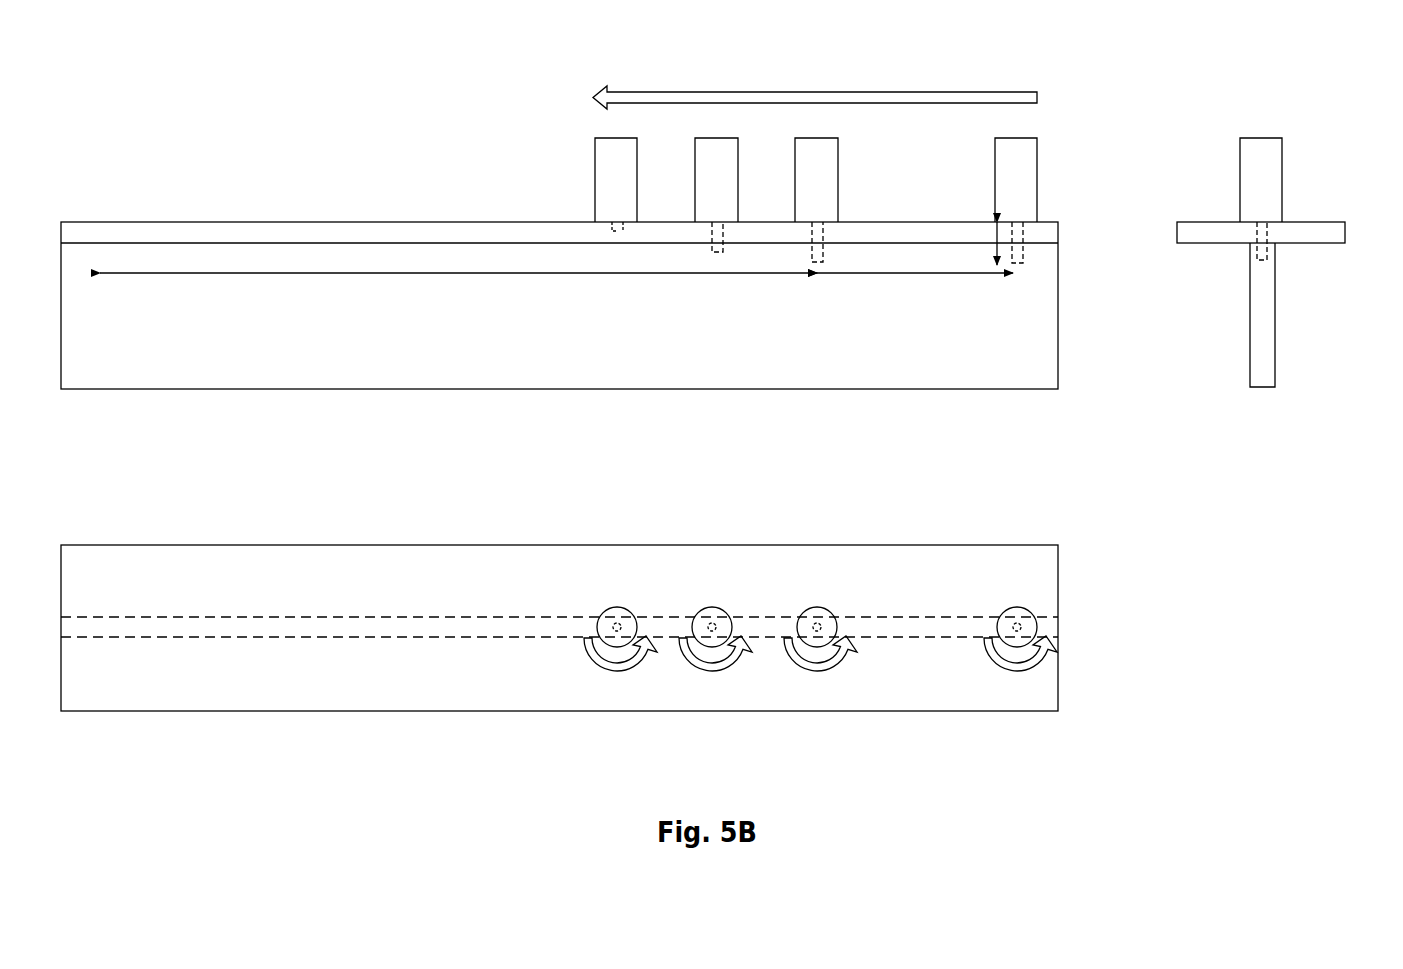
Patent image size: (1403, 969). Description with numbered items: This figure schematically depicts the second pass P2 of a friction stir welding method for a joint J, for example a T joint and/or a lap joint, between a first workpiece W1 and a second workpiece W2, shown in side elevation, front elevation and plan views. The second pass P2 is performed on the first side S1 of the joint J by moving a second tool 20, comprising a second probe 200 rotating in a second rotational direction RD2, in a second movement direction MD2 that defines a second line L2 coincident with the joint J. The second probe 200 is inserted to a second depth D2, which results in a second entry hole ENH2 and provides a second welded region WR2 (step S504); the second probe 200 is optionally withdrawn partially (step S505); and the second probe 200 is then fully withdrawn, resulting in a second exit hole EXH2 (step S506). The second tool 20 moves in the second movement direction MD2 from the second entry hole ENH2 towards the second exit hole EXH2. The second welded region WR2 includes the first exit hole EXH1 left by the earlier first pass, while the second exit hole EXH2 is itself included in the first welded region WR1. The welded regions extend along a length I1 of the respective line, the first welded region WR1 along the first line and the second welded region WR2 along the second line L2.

The second tool 20 is at (1040, 152).
The second probe 200 is at (1098, 312).
The first side of the joint S1 is at (1232, 202).
The inserting the second probe step S504 is at (1020, 184).
The partially withdrawing the second probe step S505 is at (718, 179).
The fully withdrawing the second probe step S506 is at (617, 168).
The first workpiece W1 is at (1177, 228).
The second workpiece W2 is at (1250, 347).
The joint J is at (1243, 245).
The second depth D2 is at (976, 243).
The first welded region WR1 is at (458, 260).
The second welded region WR2 is at (915, 262).
The first length I1 is at (736, 261).
The first exit hole EXH1 is at (1012, 335).
The second exit hole EXH2 is at (614, 260).
The second entry hole ENH2 is at (1057, 290).
The second pass P2 is at (815, 81).
The second movement direction MD2 is at (820, 67).
The second line L2 is at (872, 67).
The second rotational direction RD2 is at (559, 628).